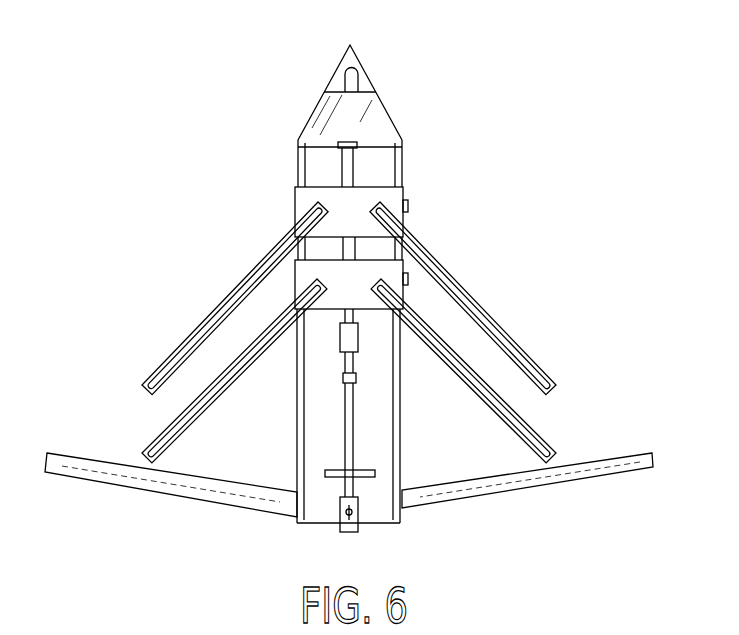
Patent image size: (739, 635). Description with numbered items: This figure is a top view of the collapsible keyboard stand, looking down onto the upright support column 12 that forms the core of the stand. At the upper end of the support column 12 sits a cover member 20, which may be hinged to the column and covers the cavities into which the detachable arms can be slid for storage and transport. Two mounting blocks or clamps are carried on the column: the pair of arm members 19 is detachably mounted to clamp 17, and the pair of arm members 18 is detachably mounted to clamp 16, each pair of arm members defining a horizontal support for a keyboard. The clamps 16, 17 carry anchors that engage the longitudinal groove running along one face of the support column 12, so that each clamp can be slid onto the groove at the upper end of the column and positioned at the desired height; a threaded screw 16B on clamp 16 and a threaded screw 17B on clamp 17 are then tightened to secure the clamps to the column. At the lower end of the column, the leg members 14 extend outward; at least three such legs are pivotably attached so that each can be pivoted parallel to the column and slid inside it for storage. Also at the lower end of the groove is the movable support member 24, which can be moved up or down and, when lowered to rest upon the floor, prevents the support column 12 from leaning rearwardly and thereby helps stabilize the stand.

The support column 12 is at (397, 423).
The leg members 14 is at (65, 478).
The clamp 16 is at (294, 281).
The threaded screw 16B is at (409, 281).
The clamp 17 is at (295, 198).
The threaded screw 17B is at (409, 207).
The arm members 18 is at (155, 438).
The arm members 19 is at (232, 290).
The cover member 20 is at (370, 103).
The movable support member 24 is at (358, 527).